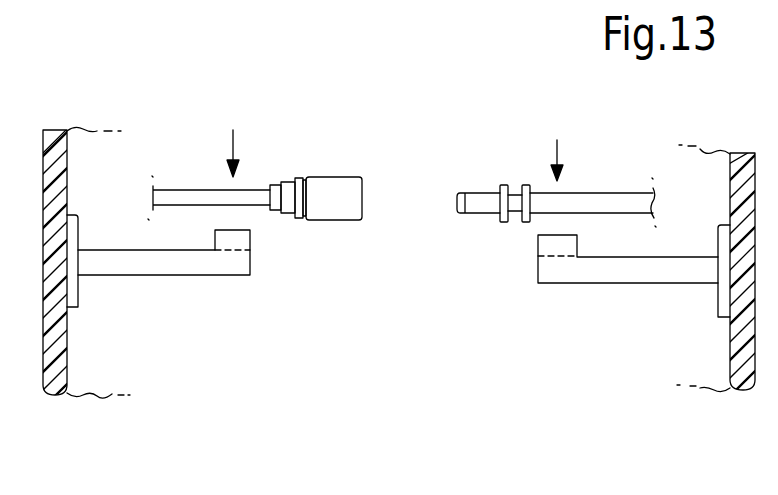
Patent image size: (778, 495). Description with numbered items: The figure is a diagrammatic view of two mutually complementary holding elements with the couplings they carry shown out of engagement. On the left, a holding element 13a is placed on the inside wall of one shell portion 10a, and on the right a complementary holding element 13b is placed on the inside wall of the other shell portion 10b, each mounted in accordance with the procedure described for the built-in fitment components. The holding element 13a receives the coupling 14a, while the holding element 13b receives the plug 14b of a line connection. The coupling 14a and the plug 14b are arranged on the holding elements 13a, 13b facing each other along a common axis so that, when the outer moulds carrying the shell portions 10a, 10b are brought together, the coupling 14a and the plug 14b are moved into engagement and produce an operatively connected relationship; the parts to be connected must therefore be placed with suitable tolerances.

The shell portion 10a is at (63, 377).
The shell portion 10b is at (743, 377).
The holding element 13a is at (187, 262).
The holding element 13b is at (625, 272).
The coupling 14a is at (317, 190).
The plug 14b is at (503, 185).